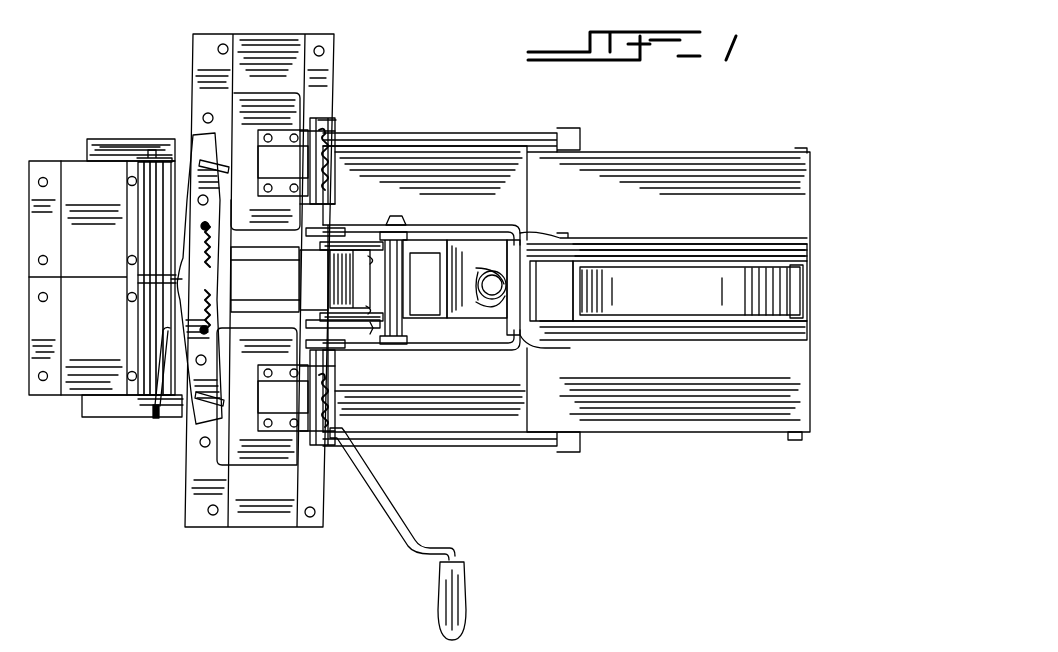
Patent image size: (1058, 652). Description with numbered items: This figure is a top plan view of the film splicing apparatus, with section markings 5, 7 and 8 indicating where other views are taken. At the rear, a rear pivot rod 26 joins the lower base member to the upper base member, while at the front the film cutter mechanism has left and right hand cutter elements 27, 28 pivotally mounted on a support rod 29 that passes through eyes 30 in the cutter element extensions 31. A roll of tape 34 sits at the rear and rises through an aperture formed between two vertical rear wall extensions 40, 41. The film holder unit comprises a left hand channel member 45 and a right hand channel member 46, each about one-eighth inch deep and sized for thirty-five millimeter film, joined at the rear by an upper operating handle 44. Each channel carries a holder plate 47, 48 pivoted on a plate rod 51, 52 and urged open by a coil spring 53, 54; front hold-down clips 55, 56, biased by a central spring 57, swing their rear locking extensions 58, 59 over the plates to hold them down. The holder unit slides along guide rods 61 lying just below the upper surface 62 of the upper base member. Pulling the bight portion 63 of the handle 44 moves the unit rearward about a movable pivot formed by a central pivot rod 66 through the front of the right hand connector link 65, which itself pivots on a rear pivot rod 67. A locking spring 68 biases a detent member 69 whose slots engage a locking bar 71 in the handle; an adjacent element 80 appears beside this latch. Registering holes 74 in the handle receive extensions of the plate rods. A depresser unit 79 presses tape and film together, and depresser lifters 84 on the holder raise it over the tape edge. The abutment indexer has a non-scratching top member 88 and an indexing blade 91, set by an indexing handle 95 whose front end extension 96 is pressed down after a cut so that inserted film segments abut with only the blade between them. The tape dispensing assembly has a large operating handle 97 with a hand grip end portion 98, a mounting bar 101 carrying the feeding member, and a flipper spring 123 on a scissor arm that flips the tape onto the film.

The section line 5- 5 is at (836, 300).
The section line 7- 7 is at (302, 318).
The section line 8- 8 is at (228, 332).
The rear pivot rod 26 is at (793, 440).
The left hand cutter element 27 is at (80, 165).
The right hand cutter element 28 is at (68, 388).
The support rod 29 is at (148, 238).
The eyes 30 is at (143, 168).
The cutter element extensions 31 is at (130, 398).
The roll of tape 34 is at (716, 272).
The vertical rear wall extension 40 is at (678, 334).
The vertical rear wall extension 41 is at (680, 260).
The upper operating handle 44 is at (404, 340).
The left hand channel member 45 is at (276, 42).
The right hand channel member 46 is at (546, 234).
The holder plate 47 is at (262, 96).
The holder plate 48 is at (260, 458).
The plate rod 51 is at (325, 187).
The plate rod 52 is at (322, 410).
The coil spring 53 is at (326, 168).
The coil spring 54 is at (322, 380).
The front hold-down clip 55 is at (205, 160).
The front hold-down clip 56 is at (178, 281).
The central spring 57 is at (208, 262).
The rear locking extension 58 is at (222, 172).
The rear locking extension 59 is at (207, 407).
The guide rod 61 is at (484, 439).
The upper surface 62 is at (448, 418).
The bight portion 63 is at (540, 294).
The right hand connector link 65 is at (530, 340).
The central pivot rod 66 is at (394, 215).
The rear pivot rod 67 is at (570, 236).
The locking spring 68 is at (462, 284).
The detent member 69 is at (464, 322).
The locking bar 71 is at (434, 322).
The registering holes 74 is at (326, 322).
The depresser unit 79 is at (410, 236).
The cam follower 80 is at (478, 298).
The depresser lifters 84 is at (294, 346).
The top member 88 is at (268, 246).
The indexing blade 91 is at (290, 282).
The indexing handle 95 is at (162, 352).
The front end extension 96 is at (154, 414).
The operating handle 97 is at (404, 528).
The hand grip end portion 98 is at (464, 602).
The mounting bar 101 is at (345, 250).
The flipper spring 123 is at (368, 328).